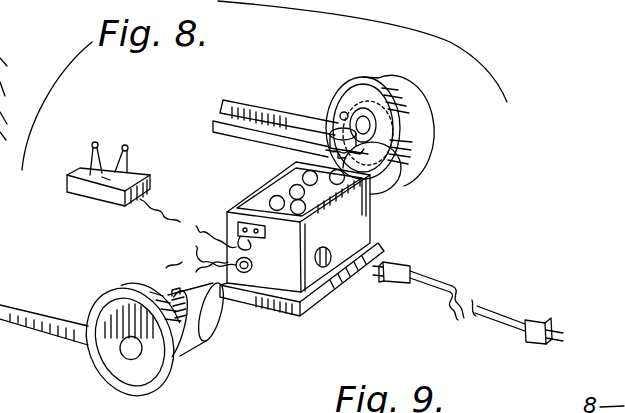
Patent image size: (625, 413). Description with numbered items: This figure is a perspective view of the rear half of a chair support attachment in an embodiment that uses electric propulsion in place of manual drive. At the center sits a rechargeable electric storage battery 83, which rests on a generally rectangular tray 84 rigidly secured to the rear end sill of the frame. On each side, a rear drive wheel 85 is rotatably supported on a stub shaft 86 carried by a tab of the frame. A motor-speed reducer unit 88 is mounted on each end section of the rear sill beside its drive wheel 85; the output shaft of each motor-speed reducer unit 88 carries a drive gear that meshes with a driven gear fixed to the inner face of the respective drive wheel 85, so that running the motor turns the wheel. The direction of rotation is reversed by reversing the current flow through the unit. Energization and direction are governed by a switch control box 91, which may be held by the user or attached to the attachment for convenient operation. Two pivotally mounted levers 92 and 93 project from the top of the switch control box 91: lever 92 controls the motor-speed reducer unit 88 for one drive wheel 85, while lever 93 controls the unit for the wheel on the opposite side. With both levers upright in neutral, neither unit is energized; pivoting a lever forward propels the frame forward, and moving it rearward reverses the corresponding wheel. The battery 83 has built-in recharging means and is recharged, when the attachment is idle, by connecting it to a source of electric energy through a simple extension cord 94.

The rechargeable electric storage battery 83 is at (353, 221).
The tray 84 is at (278, 316).
The drive wheel 85 is at (410, 102).
The stub shaft 86 is at (126, 352).
The motor-speed reducer unit 88 is at (377, 178).
The switch control box 91 is at (140, 178).
The lever 92 is at (150, 108).
The lever 93 is at (94, 142).
The extension cord 94 is at (447, 279).